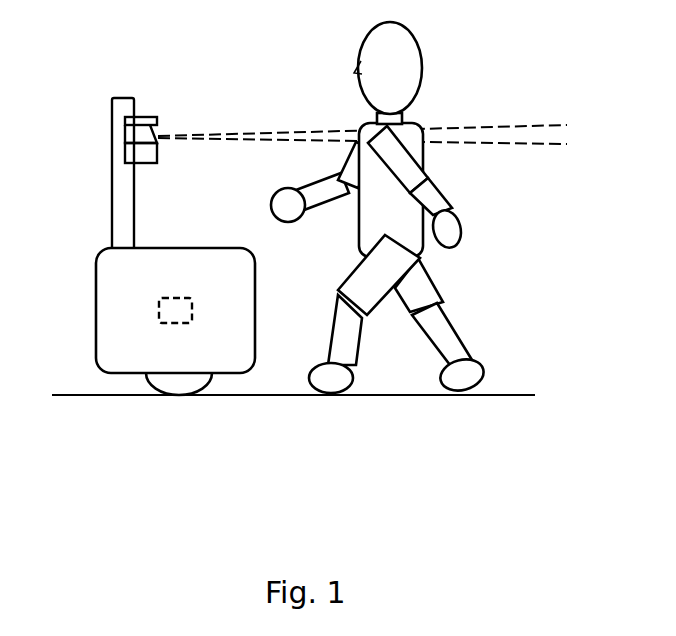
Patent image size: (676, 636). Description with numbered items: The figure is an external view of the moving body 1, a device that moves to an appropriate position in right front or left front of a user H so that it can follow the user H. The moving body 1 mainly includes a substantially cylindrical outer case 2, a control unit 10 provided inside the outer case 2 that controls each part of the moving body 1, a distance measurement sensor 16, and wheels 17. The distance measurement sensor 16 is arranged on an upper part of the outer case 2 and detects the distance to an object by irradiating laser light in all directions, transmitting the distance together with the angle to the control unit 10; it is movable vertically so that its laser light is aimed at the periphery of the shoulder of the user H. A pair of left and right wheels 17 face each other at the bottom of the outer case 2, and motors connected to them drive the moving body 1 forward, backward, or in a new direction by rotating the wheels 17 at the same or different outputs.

The moving body 1 is at (84, 90).
The outer case 2 is at (117, 301).
The control unit 10 is at (180, 297).
The distance measurement sensor 16 is at (143, 118).
The wheels 17 is at (175, 385).
The user H is at (418, 68).